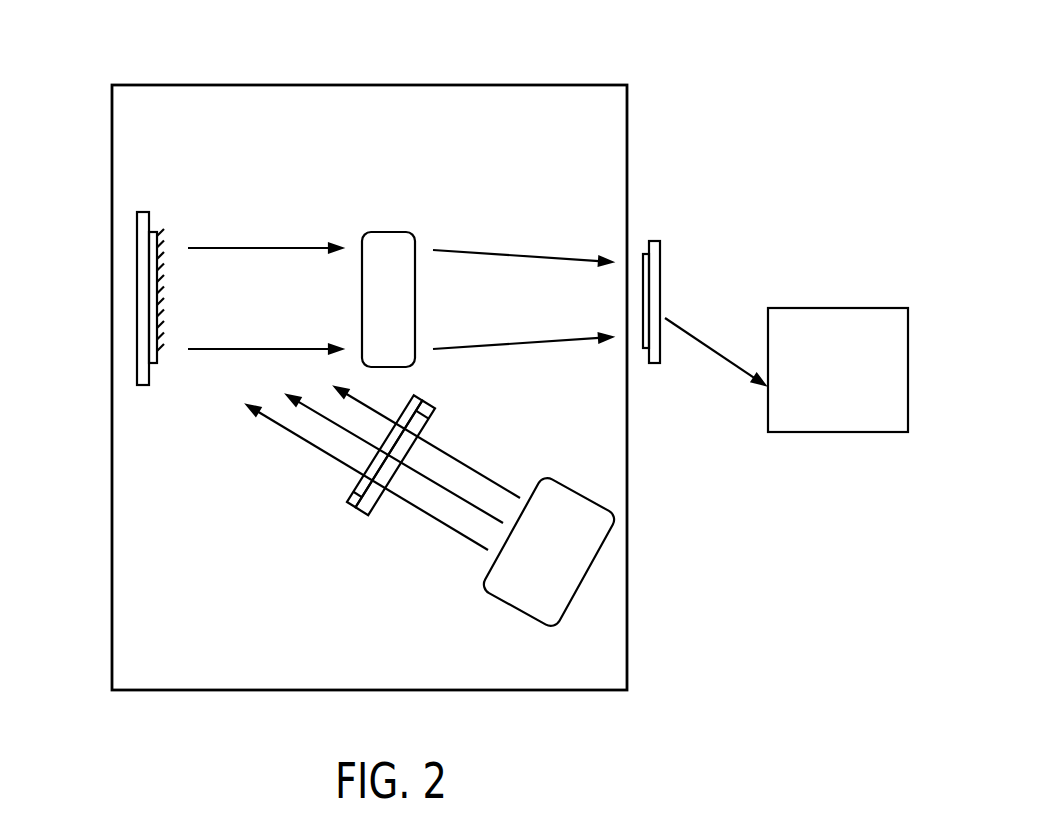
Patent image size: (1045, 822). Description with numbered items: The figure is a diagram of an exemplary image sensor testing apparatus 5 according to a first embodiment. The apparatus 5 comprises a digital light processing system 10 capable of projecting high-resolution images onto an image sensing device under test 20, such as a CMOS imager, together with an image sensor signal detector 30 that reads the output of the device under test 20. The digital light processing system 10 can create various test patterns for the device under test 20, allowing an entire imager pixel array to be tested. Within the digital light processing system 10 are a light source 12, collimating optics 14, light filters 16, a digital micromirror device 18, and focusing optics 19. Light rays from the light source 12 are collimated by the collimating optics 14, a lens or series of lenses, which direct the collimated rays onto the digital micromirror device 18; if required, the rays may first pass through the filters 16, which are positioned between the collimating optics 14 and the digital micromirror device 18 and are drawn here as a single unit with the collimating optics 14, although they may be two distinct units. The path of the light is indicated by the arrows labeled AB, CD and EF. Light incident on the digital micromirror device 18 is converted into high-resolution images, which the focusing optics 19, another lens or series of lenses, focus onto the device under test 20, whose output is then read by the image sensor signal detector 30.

The image sensor testing apparatus 5 is at (498, 54).
The digital light processing system 10 is at (112, 165).
The light source 12 is at (503, 582).
The collimating optics 14 is at (363, 507).
The light filters 16 is at (353, 482).
The digital micromirror device 18 is at (168, 222).
The focusing optics 19 is at (388, 240).
The image sensing device under test 20 is at (672, 242).
The image sensor signal detector 30 is at (838, 432).